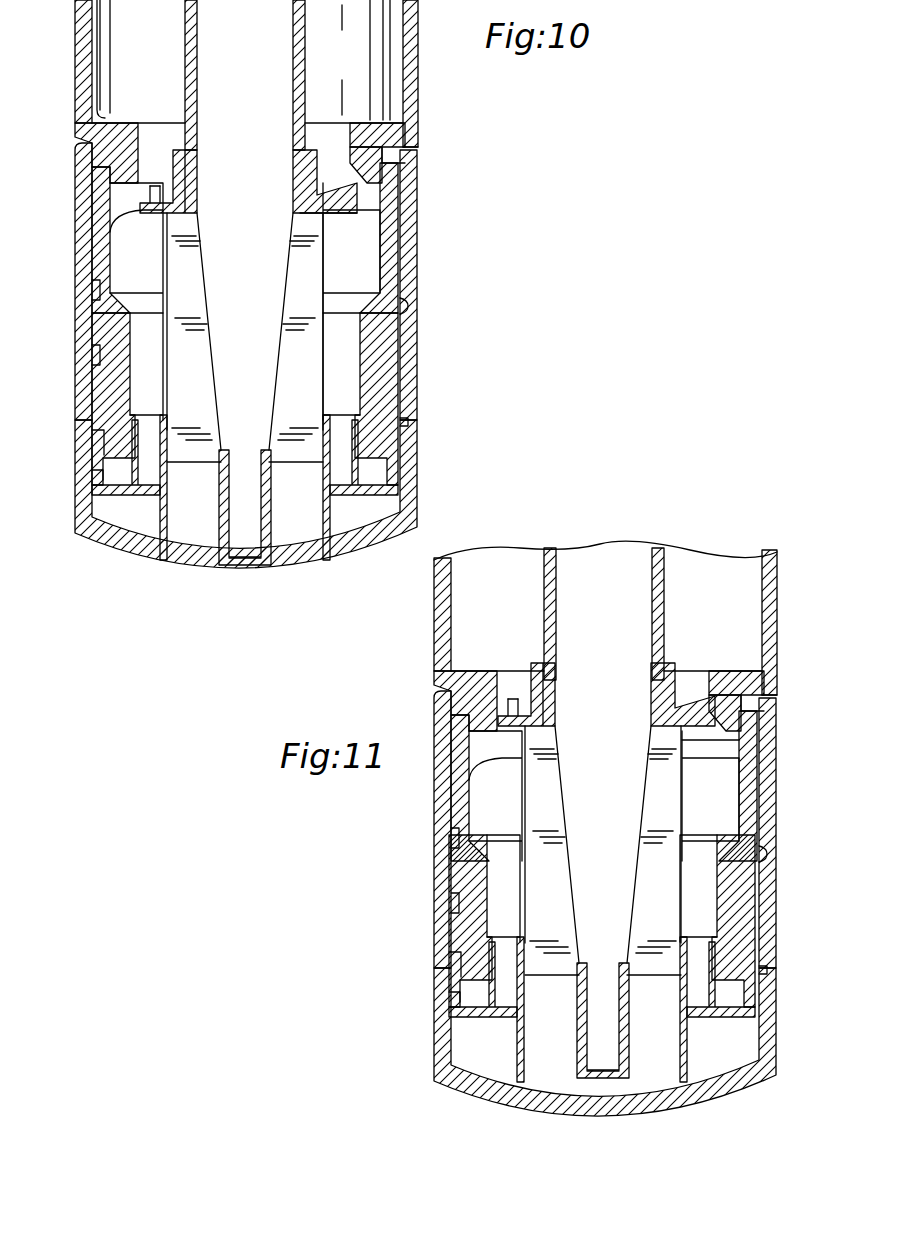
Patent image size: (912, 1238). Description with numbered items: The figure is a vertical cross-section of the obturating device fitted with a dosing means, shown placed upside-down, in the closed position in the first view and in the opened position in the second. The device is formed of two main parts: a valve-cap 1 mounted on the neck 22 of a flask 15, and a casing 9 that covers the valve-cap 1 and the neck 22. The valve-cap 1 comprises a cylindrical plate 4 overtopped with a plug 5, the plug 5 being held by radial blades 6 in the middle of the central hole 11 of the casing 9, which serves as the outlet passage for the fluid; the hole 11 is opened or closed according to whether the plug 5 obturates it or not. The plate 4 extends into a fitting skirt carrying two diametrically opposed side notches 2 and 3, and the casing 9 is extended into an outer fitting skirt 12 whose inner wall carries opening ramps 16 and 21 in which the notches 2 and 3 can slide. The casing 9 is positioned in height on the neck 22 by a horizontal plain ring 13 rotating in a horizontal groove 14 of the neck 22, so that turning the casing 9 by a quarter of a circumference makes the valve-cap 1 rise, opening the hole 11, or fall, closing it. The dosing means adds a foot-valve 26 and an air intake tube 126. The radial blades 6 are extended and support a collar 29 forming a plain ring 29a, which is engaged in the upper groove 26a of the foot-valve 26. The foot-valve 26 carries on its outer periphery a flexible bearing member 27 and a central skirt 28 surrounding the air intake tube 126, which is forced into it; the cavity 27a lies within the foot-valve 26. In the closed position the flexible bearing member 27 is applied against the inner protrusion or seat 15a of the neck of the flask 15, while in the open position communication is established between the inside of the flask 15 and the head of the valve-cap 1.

In FIG. 10, the valve-cap 1 is at (93, 482).
In FIG. 11, the valve-cap 1 is at (440, 990).
In FIG. 10, the side notch 2 is at (95, 388).
In FIG. 11, the side notch 2 is at (445, 916).
In FIG. 10, the side notch 3 is at (408, 398).
In FIG. 11, the side notch 3 is at (760, 922).
In FIG. 10, the cylindrical plate 4 is at (150, 500).
In FIG. 11, the cylindrical plate 4 is at (497, 1010).
In FIG. 10, the plug 5 is at (220, 505).
In FIG. 11, the plug 5 is at (577, 1052).
In FIG. 10, the radial blades 6 is at (195, 455).
In FIG. 11, the radial blades 6 is at (548, 970).
In FIG. 10, the casing 9 is at (407, 508).
In FIG. 11, the casing 9 is at (761, 1070).
In FIG. 10, the central hole 11 is at (297, 560).
In FIG. 11, the central hole 11 is at (598, 1112).
In FIG. 10, the outer fitting skirt 12 is at (413, 248).
In FIG. 11, the outer fitting skirt 12 is at (772, 790).
In FIG. 10, the horizontal plain ring 13 is at (404, 306).
In FIG. 11, the horizontal plain ring 13 is at (756, 858).
In FIG. 10, the groove 14 is at (100, 292).
In FIG. 11, the groove 14 is at (452, 855).
In FIG. 10, the flask 15 is at (83, 52).
In FIG. 11, the flask 15 is at (440, 632).
In FIG. 10, the inner protrusion or seat 15a is at (420, 155).
In FIG. 11, the inner protrusion or seat 15a is at (778, 727).
In FIG. 10, the opening ramp 16 is at (100, 440).
In FIG. 11, the opening ramp 16 is at (448, 960).
In FIG. 10, the opening ramp 21 is at (410, 423).
In FIG. 11, the opening ramp 21 is at (766, 942).
In FIG. 10, the neck 22 is at (90, 356).
In FIG. 11, the neck 22 is at (452, 880).
In FIG. 10, the foot-valve 26 is at (140, 232).
In FIG. 11, the foot-valve 26 is at (515, 737).
In FIG. 10, the upper groove 26a is at (395, 220).
In FIG. 10, the flexible bearing member 27 is at (392, 192).
In FIG. 11, the flexible bearing member 27 is at (740, 690).
In FIG. 11, the piston cavity 27a is at (680, 748).
In FIG. 10, the central skirt 28 is at (350, 128).
In FIG. 11, the central skirt 28 is at (677, 677).
In FIG. 10, the collar 29 is at (197, 192).
In FIG. 11, the collar 29 is at (553, 702).
In FIG. 10, the plain ring 29a is at (146, 198).
In FIG. 11, the plain ring 29a is at (520, 703).
In FIG. 10, the air intake tube 126 is at (305, 73).
In FIG. 11, the air intake tube 126 is at (675, 565).